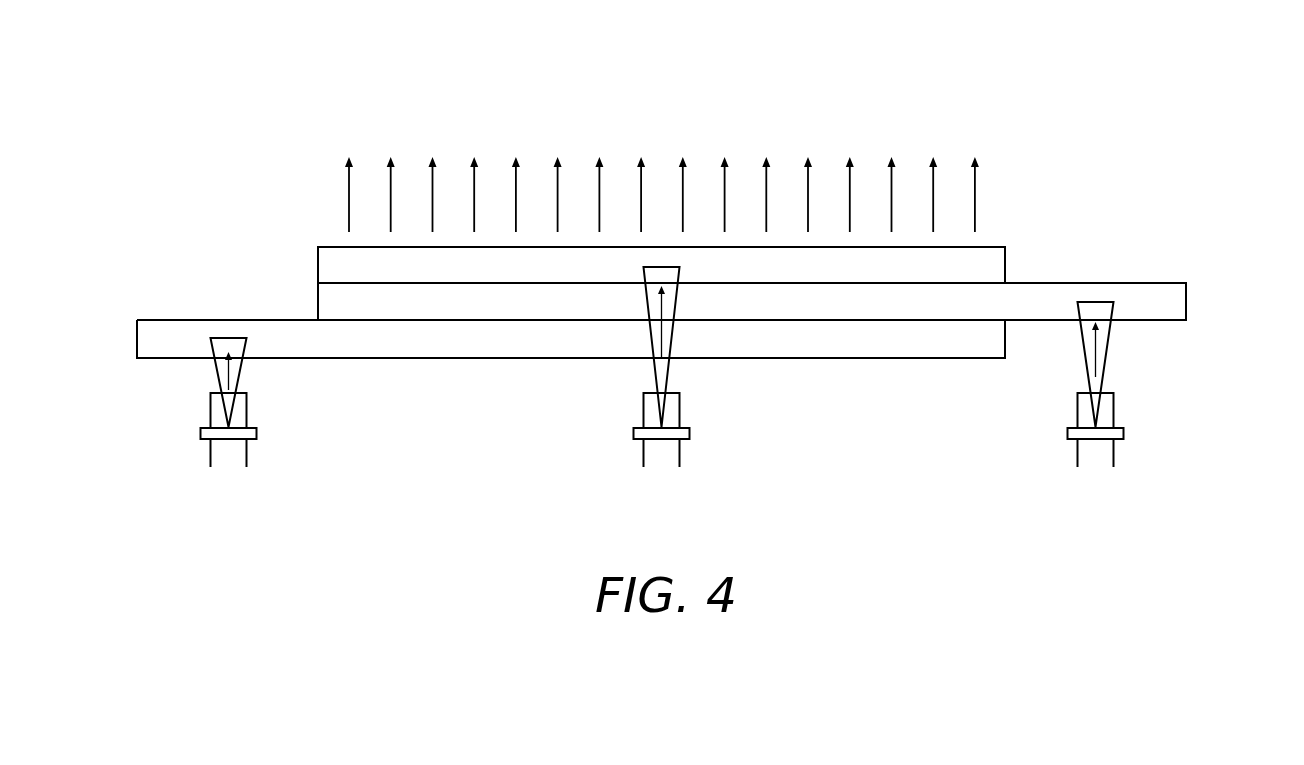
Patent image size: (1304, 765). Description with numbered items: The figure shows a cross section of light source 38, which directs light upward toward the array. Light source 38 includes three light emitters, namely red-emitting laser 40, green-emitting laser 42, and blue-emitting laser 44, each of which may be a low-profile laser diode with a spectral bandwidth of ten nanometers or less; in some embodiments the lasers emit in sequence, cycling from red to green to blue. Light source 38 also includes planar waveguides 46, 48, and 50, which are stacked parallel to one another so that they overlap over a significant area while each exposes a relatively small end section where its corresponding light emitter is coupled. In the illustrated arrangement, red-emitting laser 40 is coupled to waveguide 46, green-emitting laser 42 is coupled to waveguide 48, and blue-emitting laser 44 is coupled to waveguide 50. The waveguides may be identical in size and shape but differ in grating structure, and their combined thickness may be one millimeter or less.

The light source 38 is at (143, 147).
The red-emitting laser 40 is at (690, 433).
The green-emitting laser 42 is at (1123, 433).
The blue-emitting laser 44 is at (257, 433).
The planar waveguide 46 is at (318, 268).
The planar waveguide 48 is at (1186, 297).
The planar waveguide 50 is at (137, 337).